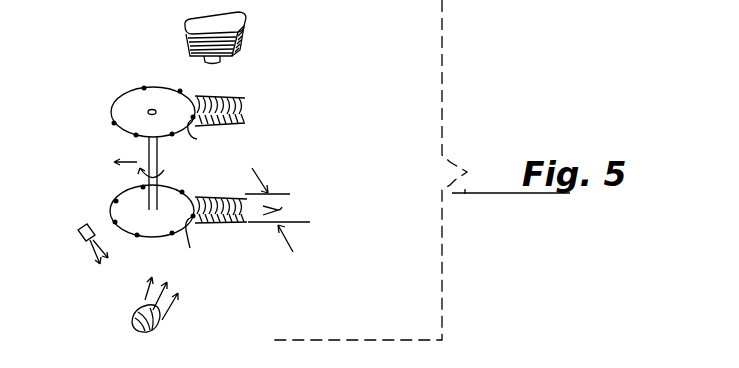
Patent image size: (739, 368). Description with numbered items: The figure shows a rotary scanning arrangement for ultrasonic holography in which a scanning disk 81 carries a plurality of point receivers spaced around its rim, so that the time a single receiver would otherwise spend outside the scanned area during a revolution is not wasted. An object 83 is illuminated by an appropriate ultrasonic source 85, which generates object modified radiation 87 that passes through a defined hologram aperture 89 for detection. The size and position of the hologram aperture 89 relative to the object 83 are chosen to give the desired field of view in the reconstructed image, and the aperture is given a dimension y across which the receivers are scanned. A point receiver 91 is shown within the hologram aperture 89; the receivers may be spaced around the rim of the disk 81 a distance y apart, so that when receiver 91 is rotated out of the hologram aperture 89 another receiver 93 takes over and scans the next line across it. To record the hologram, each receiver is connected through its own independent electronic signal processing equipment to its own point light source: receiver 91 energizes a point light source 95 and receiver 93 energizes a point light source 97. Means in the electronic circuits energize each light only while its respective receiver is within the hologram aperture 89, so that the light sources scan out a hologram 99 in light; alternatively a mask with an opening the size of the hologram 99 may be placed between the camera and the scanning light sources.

The scanning disk 81 is at (128, 212).
The object 83 is at (160, 323).
The ultrasonic source 85 is at (78, 232).
The object modified radiation 87 is at (144, 292).
The hologram aperture 89 is at (236, 226).
The point receiver 91 is at (196, 242).
The receiver 93 is at (183, 192).
The point light source 95 is at (201, 137).
The point light source 97 is at (180, 89).
The hologram 99 is at (241, 103).